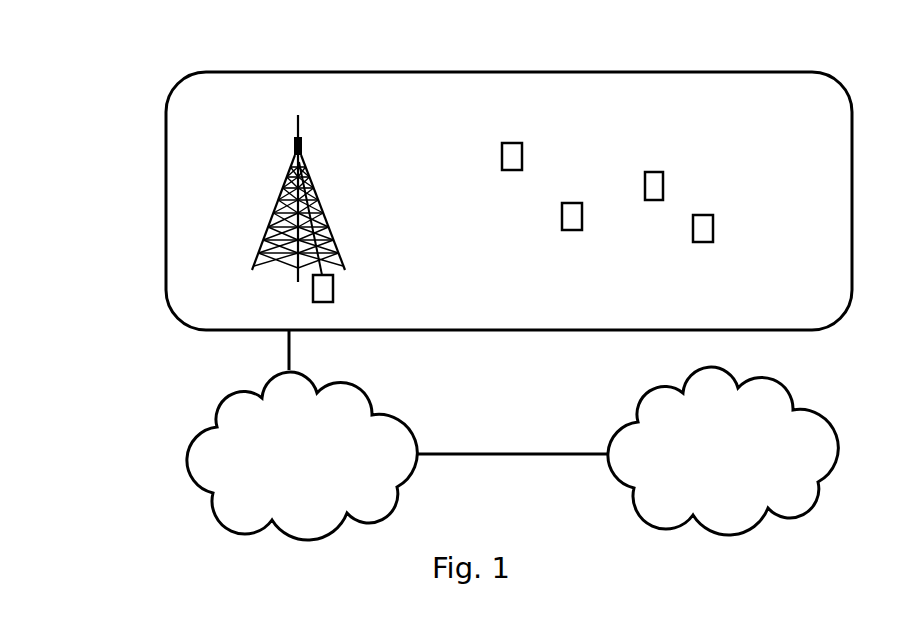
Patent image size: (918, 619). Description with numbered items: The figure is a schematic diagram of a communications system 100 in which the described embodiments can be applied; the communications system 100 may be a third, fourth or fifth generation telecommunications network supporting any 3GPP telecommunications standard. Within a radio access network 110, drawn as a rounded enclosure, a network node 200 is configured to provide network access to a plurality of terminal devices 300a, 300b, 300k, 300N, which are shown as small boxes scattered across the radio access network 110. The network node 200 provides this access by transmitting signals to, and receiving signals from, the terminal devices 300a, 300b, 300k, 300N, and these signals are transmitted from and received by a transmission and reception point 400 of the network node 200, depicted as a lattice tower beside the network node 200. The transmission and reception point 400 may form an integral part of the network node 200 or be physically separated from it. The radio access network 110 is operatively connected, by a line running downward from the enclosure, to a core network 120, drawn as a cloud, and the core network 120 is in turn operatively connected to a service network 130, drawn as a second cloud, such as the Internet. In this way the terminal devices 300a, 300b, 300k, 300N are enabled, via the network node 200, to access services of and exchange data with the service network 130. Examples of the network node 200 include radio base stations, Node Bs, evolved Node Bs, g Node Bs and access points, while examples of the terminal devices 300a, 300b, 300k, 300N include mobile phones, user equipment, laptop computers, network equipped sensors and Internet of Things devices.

The communications system 100 is at (149, 59).
The radio access network 110 is at (166, 232).
The transmission and reception point 400 is at (298, 134).
The network node 200 is at (334, 290).
The terminal device 300a is at (511, 106).
The terminal device 300b is at (575, 230).
The terminal device 300k is at (705, 243).
The terminal device 300N is at (652, 172).
The core network 120 is at (282, 476).
The service network 130 is at (702, 472).